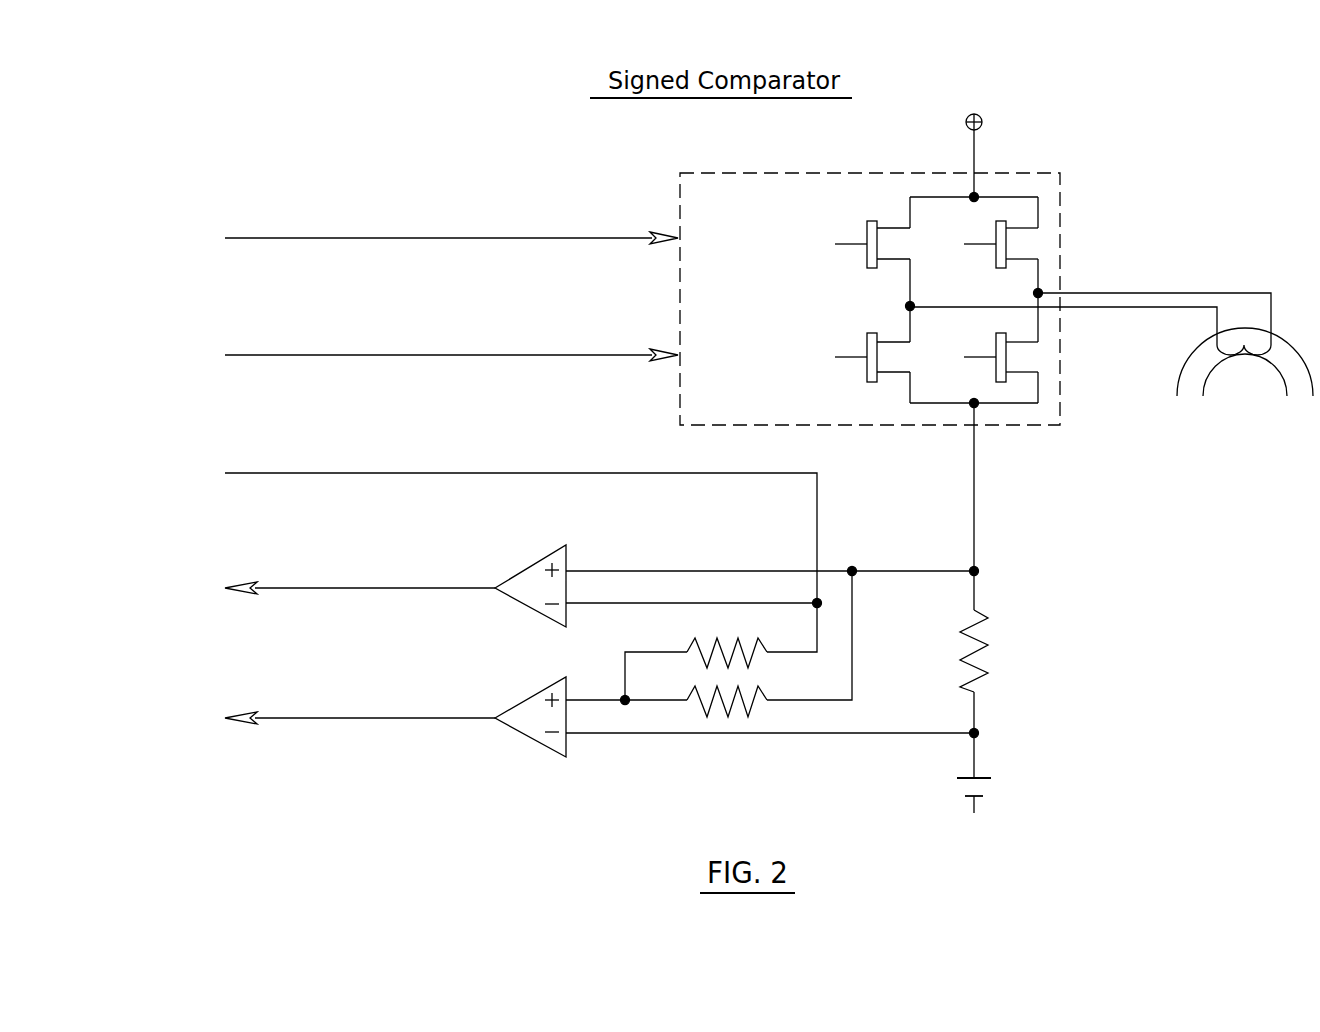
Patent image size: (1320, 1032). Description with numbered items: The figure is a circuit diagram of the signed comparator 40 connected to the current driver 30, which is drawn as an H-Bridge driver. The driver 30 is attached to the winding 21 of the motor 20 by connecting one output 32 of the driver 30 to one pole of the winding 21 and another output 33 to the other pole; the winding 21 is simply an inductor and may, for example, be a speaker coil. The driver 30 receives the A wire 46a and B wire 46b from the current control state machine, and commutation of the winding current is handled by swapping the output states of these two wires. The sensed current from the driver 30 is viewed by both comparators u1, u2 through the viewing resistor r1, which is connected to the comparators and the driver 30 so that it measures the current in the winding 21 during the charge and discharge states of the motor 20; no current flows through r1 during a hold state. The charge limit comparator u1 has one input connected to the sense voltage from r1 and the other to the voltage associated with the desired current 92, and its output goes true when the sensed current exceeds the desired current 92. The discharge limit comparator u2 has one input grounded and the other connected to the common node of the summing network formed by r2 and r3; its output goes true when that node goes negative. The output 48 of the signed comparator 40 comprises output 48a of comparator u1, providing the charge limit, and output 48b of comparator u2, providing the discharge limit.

The signed comparator 40 is at (247, 168).
The A wire 46a is at (243, 237).
The B wire 46b is at (243, 353).
The desired current 92 is at (233, 467).
The output of signed comparator 48 is at (224, 578).
The output of comparator u1 48a is at (480, 594).
The output of comparator u2 48b is at (480, 724).
The charge limit comparator u1 is at (569, 543).
The discharge limit comparator u2 is at (569, 759).
The viewing resistor r1 is at (997, 650).
The resistor r2 is at (760, 663).
The resistor r3 is at (760, 714).
The current driver 30 is at (1052, 207).
The output of driver 32 is at (1192, 289).
The output of driver 33 is at (1188, 313).
The winding 21 is at (1243, 346).
The motor 20 is at (1300, 394).